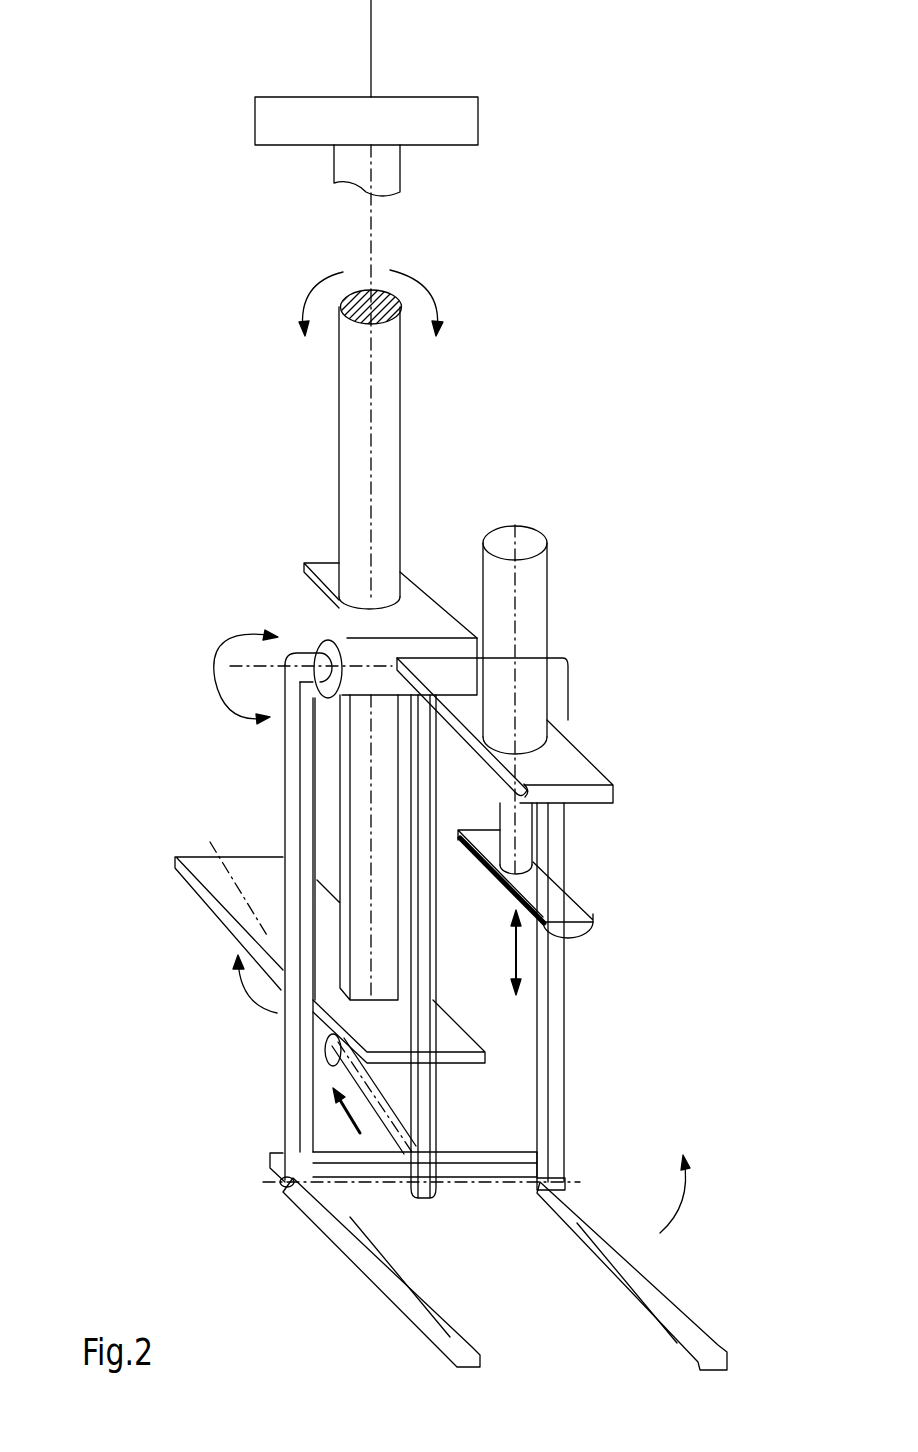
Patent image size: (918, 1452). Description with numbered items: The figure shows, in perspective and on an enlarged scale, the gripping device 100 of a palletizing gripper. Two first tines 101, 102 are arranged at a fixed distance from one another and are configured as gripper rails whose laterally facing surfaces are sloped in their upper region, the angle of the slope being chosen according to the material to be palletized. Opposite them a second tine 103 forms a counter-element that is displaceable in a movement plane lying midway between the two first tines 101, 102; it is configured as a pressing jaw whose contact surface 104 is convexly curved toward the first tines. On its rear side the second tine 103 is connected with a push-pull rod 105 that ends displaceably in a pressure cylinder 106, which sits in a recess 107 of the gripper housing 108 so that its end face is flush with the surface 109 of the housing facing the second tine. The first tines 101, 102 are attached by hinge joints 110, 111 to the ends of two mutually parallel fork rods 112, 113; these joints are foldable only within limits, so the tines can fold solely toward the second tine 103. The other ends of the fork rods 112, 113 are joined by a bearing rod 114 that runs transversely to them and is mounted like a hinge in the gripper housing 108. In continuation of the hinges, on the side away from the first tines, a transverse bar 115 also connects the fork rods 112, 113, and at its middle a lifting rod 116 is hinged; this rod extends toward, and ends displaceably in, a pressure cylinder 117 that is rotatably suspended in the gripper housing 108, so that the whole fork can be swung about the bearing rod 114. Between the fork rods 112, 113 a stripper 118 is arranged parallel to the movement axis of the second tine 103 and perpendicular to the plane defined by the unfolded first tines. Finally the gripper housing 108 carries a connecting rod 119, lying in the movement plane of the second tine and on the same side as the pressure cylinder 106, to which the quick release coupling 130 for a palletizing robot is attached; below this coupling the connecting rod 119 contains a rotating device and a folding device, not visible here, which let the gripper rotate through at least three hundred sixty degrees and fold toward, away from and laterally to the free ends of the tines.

The transfer device 100 is at (741, 1032).
The first tine 101 is at (470, 1360).
The first tine 102 is at (690, 1362).
The second tine 103 is at (577, 930).
The contact surface 104 is at (573, 940).
The push-pull rod 105 is at (520, 857).
The pressure cylinder 106 is at (533, 612).
The recess 107 is at (540, 753).
The gripper housing 108 is at (195, 858).
The surface 109 is at (495, 772).
The hinge joint 110 is at (540, 1183).
The hinge joint 111 is at (285, 1183).
The fork rod 112 is at (553, 1067).
The fork rod 113 is at (298, 1095).
The bearing rod 114 is at (315, 660).
The transverse bar 115 is at (460, 1162).
The lifting rod 116 is at (390, 1133).
The pressure cylinder 117 is at (325, 1040).
The stripper 118 is at (428, 968).
The connecting rod 119 is at (390, 417).
The coupling 130 is at (478, 118).